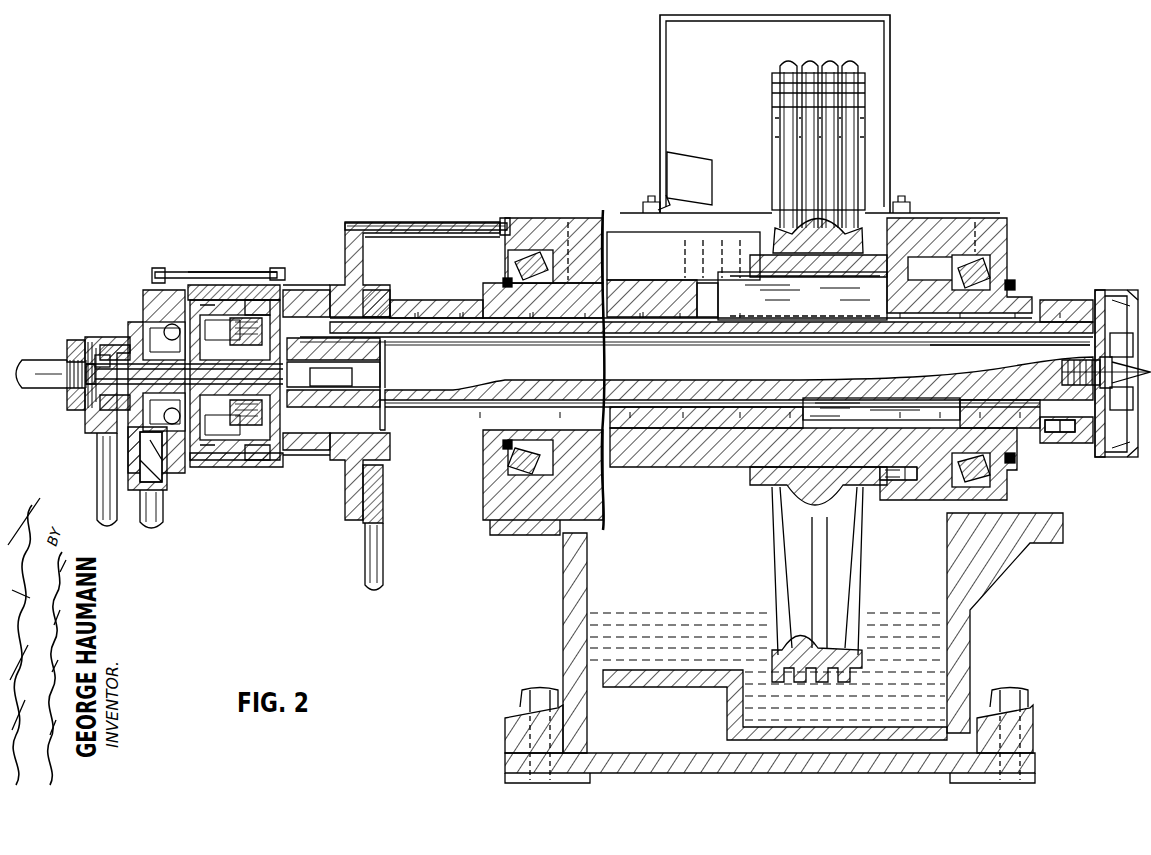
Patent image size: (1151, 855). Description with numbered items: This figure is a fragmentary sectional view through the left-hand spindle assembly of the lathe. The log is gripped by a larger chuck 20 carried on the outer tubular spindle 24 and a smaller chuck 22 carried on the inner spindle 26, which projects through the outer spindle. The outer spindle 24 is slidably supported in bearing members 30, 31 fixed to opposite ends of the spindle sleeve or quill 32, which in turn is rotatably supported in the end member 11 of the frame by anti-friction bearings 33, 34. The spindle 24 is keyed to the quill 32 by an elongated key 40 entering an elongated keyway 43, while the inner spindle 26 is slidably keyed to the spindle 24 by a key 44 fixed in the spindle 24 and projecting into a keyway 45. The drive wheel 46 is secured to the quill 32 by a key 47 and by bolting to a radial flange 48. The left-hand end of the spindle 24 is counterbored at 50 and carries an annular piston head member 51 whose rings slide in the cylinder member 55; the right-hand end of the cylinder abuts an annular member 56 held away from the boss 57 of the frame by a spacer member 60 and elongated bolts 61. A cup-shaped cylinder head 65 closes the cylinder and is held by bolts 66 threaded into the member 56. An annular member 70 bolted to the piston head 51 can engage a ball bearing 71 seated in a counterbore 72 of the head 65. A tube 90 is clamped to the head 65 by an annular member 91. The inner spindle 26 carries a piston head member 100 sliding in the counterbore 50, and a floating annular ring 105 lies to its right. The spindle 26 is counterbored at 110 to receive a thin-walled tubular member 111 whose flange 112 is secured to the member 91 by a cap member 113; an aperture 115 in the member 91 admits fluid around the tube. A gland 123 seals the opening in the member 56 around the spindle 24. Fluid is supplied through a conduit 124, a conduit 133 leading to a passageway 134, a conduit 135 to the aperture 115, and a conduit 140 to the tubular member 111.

The end member 11 is at (565, 612).
The chuck 20 is at (1120, 292).
The chuck 22 is at (1118, 358).
The outer spindle 24 is at (478, 335).
The inner spindle 26 is at (430, 420).
The bearing member 30 is at (535, 290).
The bearing member 31 is at (975, 330).
The spindle sleeve or quill 32 is at (655, 290).
The anti-friction bearing 33 is at (550, 300).
The anti-friction bearing 34 is at (1000, 268).
The elongated key 40 is at (780, 318).
The elongated keyway 43 is at (456, 318).
The elongated key 44 is at (880, 410).
The elongated keyway 45 is at (700, 400).
The drive wheel 46 is at (776, 543).
The key 47 is at (830, 295).
The radial flange 48 is at (900, 266).
The counterbore 50 is at (312, 330).
The piston head member 51 is at (200, 287).
The cylinder member 55 is at (276, 272).
The annular member 56 is at (366, 268).
The boss 57 is at (545, 530).
The spacer member 60 is at (450, 222).
The elongated bolt 61 is at (455, 240).
The cylinder head 65 is at (183, 268).
The elongated bolt 66 is at (252, 276).
The annular member 70 is at (195, 348).
The ball bearing 71 is at (150, 325).
The counterbore 72 is at (152, 348).
The tube 90 is at (215, 350).
The annular member 91 is at (88, 427).
The piston head member 100 is at (262, 447).
The annular ring 105 is at (378, 352).
The counterbore 110 is at (308, 420).
The tubular member 111 is at (350, 376).
The flange 112 is at (88, 377).
The cap member 113 is at (68, 340).
The aperture 115 is at (105, 345).
The gland 123 is at (392, 300).
The conduit 124 is at (163, 518).
The conduit 133 is at (384, 562).
The passageway 134 is at (395, 490).
The conduit 135 is at (100, 464).
The conduit 140 is at (38, 358).